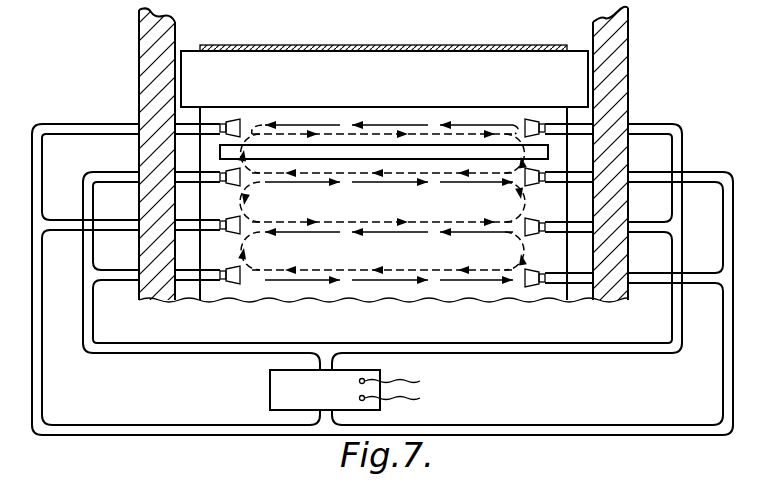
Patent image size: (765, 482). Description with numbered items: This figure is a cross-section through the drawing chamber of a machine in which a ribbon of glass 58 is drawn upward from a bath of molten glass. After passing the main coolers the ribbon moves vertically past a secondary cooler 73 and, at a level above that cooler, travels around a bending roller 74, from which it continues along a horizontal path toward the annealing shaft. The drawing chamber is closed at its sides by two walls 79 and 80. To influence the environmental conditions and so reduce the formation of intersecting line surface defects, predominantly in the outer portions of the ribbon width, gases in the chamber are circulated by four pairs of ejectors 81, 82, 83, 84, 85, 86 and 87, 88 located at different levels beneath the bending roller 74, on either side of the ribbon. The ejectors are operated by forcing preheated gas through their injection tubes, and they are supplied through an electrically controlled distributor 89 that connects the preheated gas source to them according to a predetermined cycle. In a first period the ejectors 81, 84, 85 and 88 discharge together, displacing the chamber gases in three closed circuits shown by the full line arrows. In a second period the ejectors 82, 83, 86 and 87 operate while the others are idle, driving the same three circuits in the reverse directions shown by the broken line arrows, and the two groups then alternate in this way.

The ribbon of glass 58 is at (359, 45).
The secondary cooler 73 is at (323, 158).
The bending roller 74 is at (413, 90).
The wall 79 is at (155, 70).
The wall 80 is at (613, 70).
The ejector 81 is at (527, 119).
The ejector 82 is at (228, 119).
The ejector 83 is at (533, 186).
The ejector 84 is at (231, 186).
The ejector 85 is at (536, 236).
The ejector 86 is at (231, 234).
The ejector 87 is at (531, 287).
The ejector 88 is at (230, 284).
The electrically controlled distributor 89 is at (340, 399).